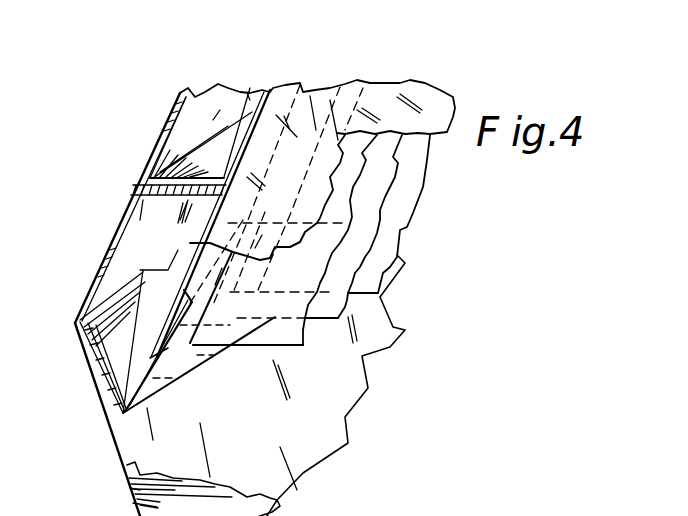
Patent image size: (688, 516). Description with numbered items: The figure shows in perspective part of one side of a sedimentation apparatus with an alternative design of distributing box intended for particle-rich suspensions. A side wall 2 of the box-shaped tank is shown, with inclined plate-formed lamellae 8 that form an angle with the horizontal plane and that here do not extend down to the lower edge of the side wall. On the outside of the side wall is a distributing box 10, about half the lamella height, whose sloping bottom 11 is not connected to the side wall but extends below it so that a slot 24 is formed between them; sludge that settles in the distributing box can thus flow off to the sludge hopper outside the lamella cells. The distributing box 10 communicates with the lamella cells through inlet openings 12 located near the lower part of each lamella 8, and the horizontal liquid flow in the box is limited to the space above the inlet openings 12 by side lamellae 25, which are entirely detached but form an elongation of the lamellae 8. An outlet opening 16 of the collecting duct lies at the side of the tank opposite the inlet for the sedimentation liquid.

The side wall 2 is at (338, 100).
The lamella 8 is at (335, 218).
The distributing box 10 is at (140, 223).
The bottom 11 is at (88, 372).
The inlet opening 12 is at (172, 348).
The outlet opening 16 is at (185, 140).
The slot 24 is at (120, 412).
The side lamella 25 is at (152, 285).